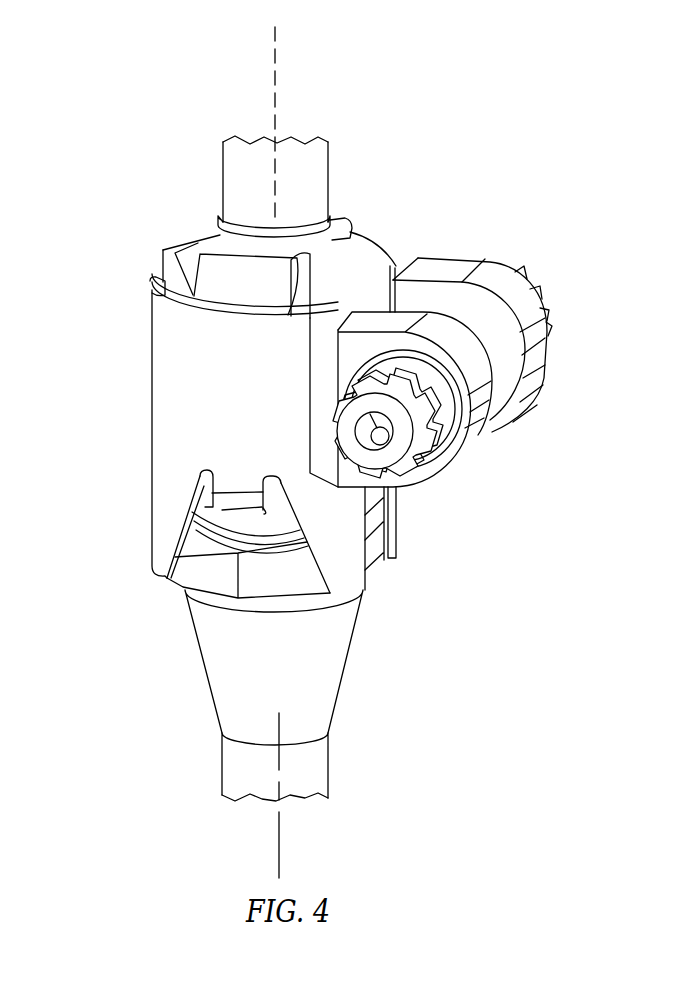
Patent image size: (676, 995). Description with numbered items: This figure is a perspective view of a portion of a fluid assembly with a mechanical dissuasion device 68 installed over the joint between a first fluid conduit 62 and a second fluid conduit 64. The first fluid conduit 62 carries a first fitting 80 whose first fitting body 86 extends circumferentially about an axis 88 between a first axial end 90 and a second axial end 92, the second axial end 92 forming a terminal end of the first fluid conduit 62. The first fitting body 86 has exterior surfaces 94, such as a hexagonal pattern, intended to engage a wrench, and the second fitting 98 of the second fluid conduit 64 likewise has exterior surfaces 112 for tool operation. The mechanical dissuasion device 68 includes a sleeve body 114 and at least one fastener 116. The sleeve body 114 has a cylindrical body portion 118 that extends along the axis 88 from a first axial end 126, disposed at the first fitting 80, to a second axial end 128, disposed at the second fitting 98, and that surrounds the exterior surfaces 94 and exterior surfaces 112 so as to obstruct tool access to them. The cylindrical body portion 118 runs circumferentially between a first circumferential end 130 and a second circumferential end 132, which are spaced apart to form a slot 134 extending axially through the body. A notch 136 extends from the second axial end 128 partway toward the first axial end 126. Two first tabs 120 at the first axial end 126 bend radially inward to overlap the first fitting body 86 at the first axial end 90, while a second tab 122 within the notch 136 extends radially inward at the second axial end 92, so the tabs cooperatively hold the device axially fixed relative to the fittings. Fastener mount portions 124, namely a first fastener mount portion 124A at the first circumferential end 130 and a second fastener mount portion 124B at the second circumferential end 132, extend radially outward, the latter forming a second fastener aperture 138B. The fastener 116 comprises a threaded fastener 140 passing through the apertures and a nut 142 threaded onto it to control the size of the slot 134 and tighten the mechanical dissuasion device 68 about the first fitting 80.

The first fluid conduit 62 is at (182, 188).
The second fluid conduit 64 is at (352, 752).
The mechanical dissuasion device 68 is at (175, 433).
The first fitting 80 is at (378, 222).
The first fitting body 86 is at (398, 262).
The axis 88 is at (275, 32).
The first axial end 90 is at (182, 248).
The second axial end 92 is at (197, 518).
The exterior surfaces 94 is at (334, 283).
The second fitting 98 is at (192, 664).
The exterior surfaces 112 is at (275, 578).
The sleeve body 114 is at (190, 372).
The fastener 116 is at (446, 442).
The cylindrical body portion 118 is at (178, 402).
The first tab 120 is at (163, 257).
The second tab 122 is at (238, 506).
The fastener mount portions 124 is at (552, 348).
The first fastener mount portion 124A is at (338, 343).
The second fastener mount portion 124B is at (505, 288).
The first axial end 126 is at (150, 281).
The second axial end 128 is at (152, 588).
The first circumferential end 130 is at (378, 576).
The second circumferential end 132 is at (396, 553).
The slot 134 is at (386, 566).
The notch 136 is at (298, 574).
The second fastener aperture 138B is at (494, 363).
The threaded fastener 140 is at (338, 424).
The nut 142 is at (546, 300).